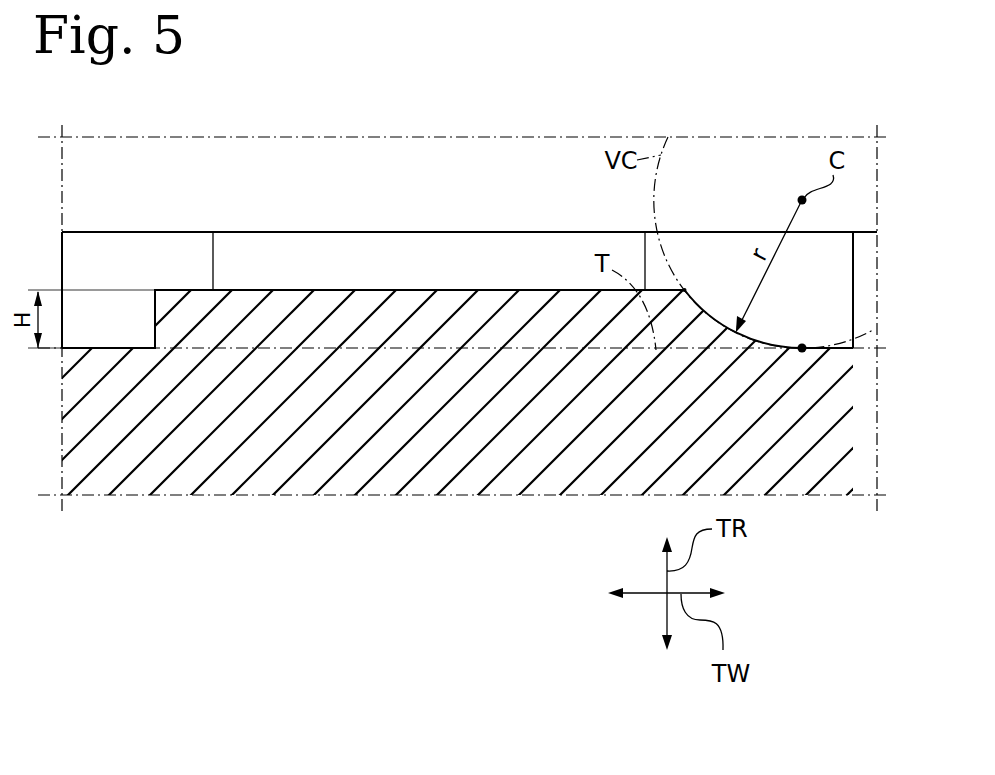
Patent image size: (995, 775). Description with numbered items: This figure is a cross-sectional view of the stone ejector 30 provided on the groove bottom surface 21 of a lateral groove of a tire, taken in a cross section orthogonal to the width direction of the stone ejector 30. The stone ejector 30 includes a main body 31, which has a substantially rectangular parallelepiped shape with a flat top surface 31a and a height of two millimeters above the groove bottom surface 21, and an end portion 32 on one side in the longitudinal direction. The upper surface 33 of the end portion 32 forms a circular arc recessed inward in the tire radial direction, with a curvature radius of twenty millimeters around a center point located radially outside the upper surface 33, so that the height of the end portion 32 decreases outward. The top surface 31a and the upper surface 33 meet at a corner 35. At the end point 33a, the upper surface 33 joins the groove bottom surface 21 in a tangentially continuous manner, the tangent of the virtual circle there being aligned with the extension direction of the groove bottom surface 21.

The groove bottom surface 21 is at (856, 347).
The stone ejector 30 is at (518, 260).
The main body 31 is at (268, 288).
The top surface 31a is at (362, 290).
The end portion 32 is at (767, 333).
The upper surface 33 is at (708, 314).
The end point 33a is at (804, 346).
The corner 35 is at (686, 290).